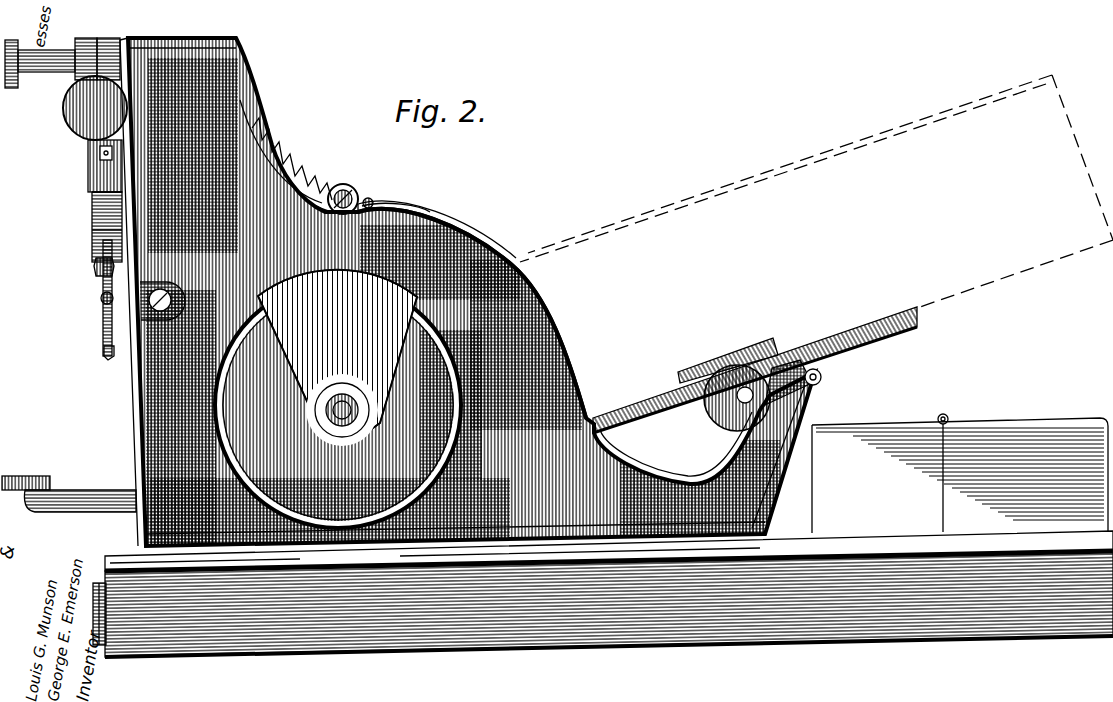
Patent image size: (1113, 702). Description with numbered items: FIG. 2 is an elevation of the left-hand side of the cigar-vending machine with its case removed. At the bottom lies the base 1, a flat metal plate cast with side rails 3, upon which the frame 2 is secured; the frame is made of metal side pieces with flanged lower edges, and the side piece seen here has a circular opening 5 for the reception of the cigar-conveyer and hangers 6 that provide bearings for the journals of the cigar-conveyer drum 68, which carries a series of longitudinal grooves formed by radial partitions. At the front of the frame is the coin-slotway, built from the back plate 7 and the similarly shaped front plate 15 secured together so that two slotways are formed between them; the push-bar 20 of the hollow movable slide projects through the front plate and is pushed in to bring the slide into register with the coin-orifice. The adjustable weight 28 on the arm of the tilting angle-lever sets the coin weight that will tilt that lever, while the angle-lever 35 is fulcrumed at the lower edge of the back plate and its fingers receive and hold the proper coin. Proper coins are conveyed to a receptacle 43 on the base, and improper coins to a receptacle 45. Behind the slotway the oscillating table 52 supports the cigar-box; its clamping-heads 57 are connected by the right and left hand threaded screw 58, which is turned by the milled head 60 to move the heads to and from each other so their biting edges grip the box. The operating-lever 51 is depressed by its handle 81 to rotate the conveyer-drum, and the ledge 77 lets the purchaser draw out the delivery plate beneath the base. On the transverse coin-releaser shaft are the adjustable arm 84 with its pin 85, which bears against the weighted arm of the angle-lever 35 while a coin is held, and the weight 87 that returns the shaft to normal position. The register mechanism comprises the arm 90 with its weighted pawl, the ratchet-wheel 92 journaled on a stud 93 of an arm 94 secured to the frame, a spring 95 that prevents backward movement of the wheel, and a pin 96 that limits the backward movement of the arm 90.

The base 1 is at (108, 560).
The frame 2 is at (497, 247).
The side rails 3 is at (477, 623).
The circular opening 5 is at (478, 372).
The hangers 6 is at (337, 358).
The plate 7 is at (103, 42).
The plate 15 is at (82, 40).
The push-bar 20 is at (55, 72).
The adjustable weight 28 is at (95, 108).
The angle-lever 35 is at (106, 352).
The receptacle 43 is at (960, 475).
The receptacle 45 is at (912, 466).
The operating-lever 51 is at (80, 486).
The oscillating table 52 is at (703, 378).
The clamping-heads 57 is at (760, 352).
The right and left hand threaded screw 58 is at (737, 398).
The milled head 60 is at (712, 400).
The cigar-conveyer drum 68 is at (230, 419).
The ledge 77 is at (97, 647).
The handle 81 is at (26, 467).
The adjustable arm 84 is at (104, 316).
The pin 85 is at (101, 300).
The weight 87 is at (112, 262).
The arm 90 is at (98, 175).
The ratchet-wheel 92 is at (310, 167).
The stud 93 is at (350, 192).
The arm 94 is at (386, 204).
The spring 95 is at (266, 128).
The pin 96 is at (92, 218).